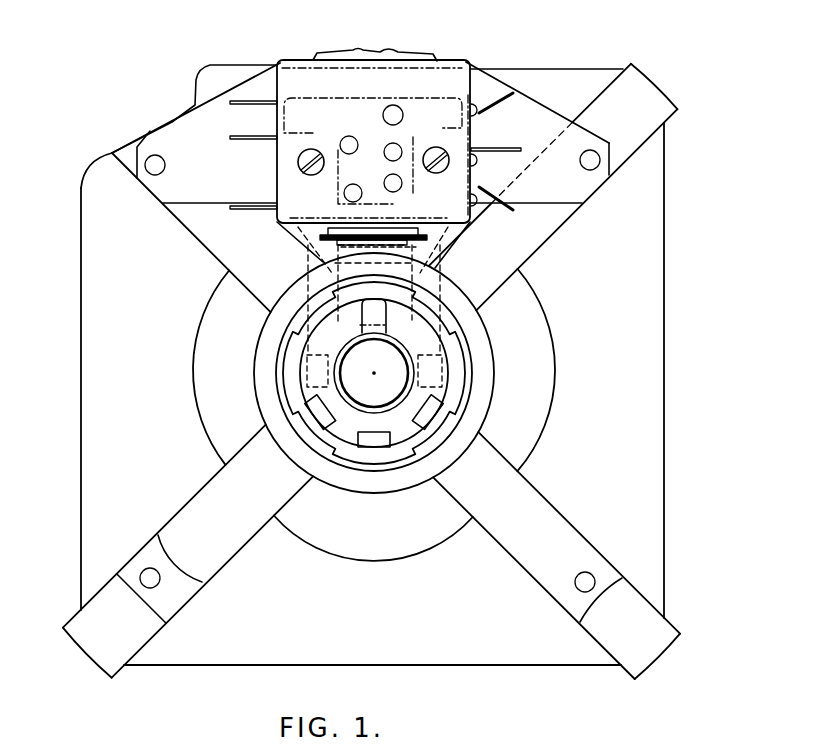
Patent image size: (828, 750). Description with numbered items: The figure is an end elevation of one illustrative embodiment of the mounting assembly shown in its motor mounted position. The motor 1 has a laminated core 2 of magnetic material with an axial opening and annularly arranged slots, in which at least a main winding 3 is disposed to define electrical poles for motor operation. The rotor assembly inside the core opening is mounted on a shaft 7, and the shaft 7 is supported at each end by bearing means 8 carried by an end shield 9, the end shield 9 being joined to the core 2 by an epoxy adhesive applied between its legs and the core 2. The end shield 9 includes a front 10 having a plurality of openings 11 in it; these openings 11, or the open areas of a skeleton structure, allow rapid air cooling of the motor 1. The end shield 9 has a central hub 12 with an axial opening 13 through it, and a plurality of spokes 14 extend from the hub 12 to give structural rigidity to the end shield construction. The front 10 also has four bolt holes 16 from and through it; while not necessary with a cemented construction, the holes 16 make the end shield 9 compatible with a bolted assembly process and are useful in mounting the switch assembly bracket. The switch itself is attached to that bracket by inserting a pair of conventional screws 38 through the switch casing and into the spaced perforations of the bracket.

The motor 1 is at (677, 231).
The laminated core 2 is at (695, 45).
The main winding 3 is at (150, 387).
The shaft 7 is at (356, 369).
The bearing means 8 is at (372, 397).
The end shield 9 is at (102, 444).
The front 10 is at (654, 379).
The openings 11 is at (208, 345).
The central hub 12 is at (483, 378).
The axial opening 13 is at (394, 365).
The spokes 14 is at (556, 223).
The bolt holes 16 is at (595, 578).
The screws 38 is at (316, 154).